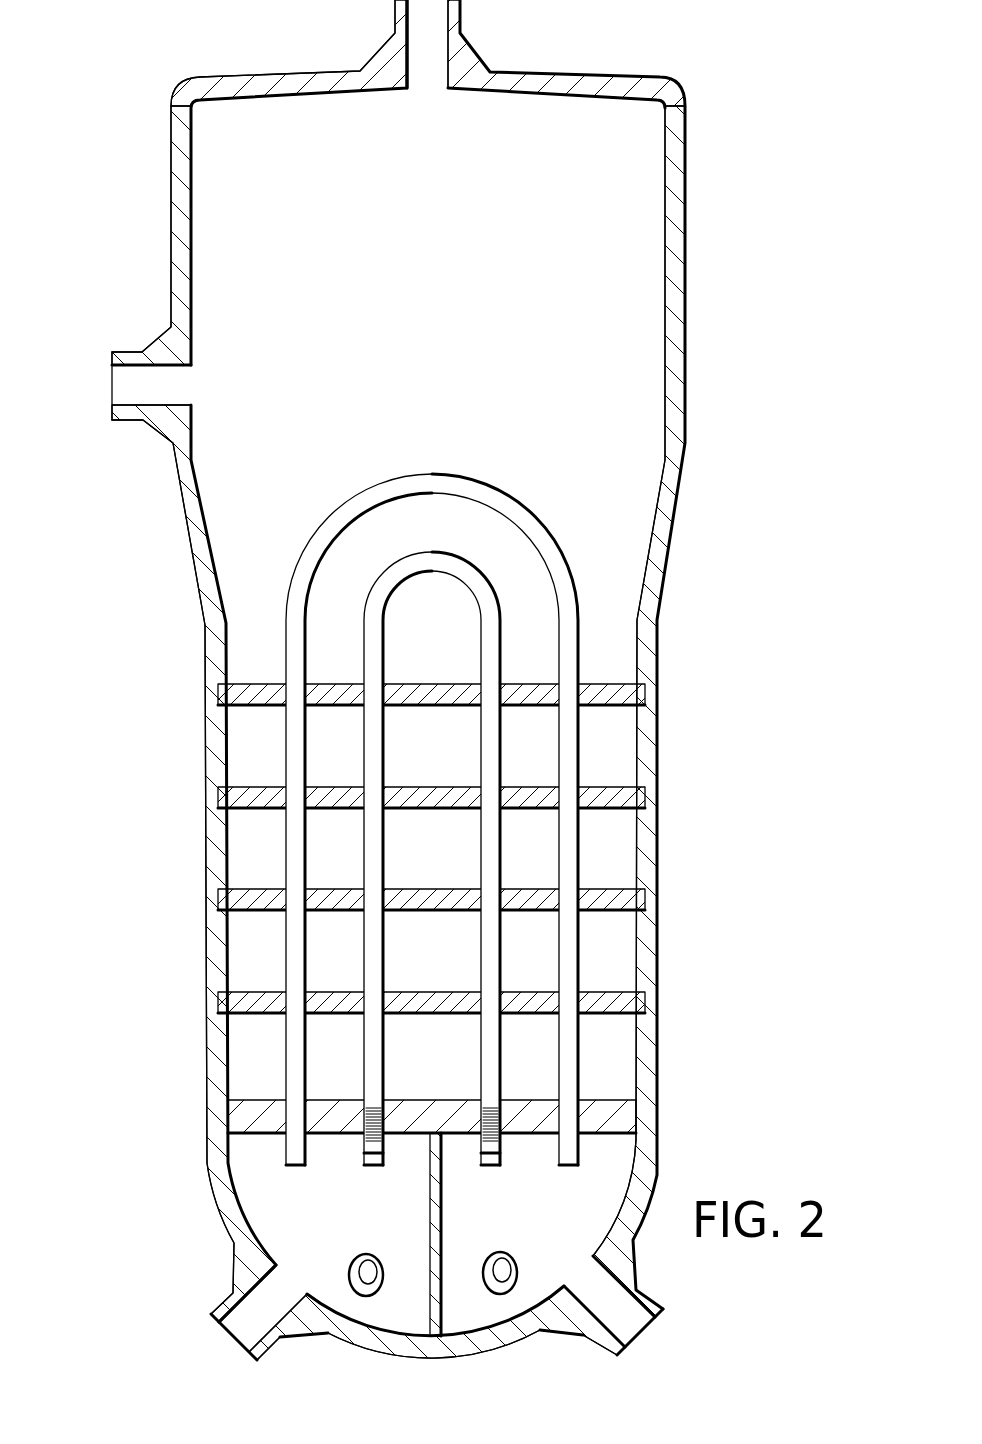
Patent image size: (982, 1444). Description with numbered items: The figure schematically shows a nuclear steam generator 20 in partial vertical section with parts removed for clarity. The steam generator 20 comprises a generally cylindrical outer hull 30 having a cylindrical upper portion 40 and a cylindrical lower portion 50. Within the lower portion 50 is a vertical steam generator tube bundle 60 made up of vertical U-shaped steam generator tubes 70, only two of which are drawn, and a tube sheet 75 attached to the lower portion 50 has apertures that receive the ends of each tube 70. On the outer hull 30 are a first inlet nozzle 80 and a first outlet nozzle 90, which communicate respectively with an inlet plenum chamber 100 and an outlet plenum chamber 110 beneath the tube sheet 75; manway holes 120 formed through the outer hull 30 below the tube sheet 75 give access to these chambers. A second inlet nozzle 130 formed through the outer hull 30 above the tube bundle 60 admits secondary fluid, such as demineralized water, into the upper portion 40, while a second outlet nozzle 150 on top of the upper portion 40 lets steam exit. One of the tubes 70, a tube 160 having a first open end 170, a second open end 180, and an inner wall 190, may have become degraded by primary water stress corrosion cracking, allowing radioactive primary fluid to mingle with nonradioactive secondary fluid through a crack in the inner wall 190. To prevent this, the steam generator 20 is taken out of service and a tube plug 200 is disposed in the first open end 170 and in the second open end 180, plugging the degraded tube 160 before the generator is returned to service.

The nuclear steam generator 20 is at (724, 288).
The outer hull 30 is at (680, 200).
The upper portion 40 is at (181, 180).
The lower portion 50 is at (212, 958).
The steam generator tube bundle 60 is at (615, 962).
The steam generator tubes 70 is at (563, 973).
The tube sheet 75 is at (258, 1105).
The first inlet nozzle 80 is at (217, 1307).
The first outlet nozzle 90 is at (640, 1300).
The inlet plenum chamber 100 is at (260, 1198).
The outlet plenum chamber 110 is at (608, 1178).
The manway holes 120 is at (362, 1268).
The second inlet nozzle 130 is at (163, 350).
The second outlet nozzle 150 is at (428, 49).
The degraded tube 160 is at (490, 1052).
The first open end 170 is at (375, 1165).
The second open end 180 is at (498, 1166).
The inner wall 190 is at (488, 1070).
The tube plug 200 is at (365, 1118).